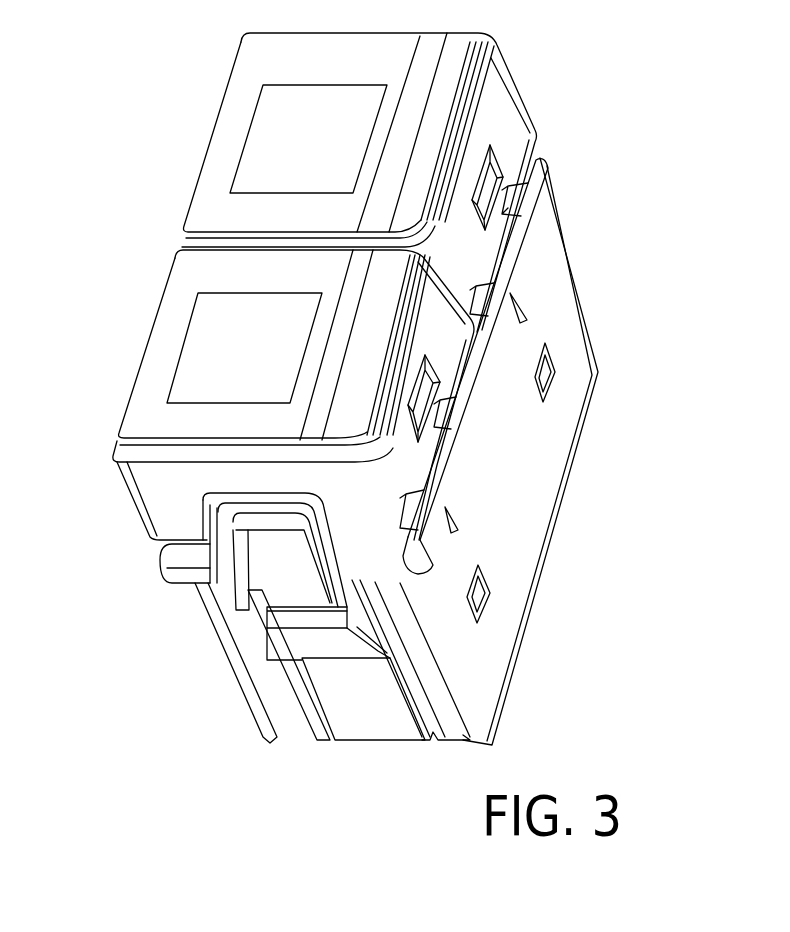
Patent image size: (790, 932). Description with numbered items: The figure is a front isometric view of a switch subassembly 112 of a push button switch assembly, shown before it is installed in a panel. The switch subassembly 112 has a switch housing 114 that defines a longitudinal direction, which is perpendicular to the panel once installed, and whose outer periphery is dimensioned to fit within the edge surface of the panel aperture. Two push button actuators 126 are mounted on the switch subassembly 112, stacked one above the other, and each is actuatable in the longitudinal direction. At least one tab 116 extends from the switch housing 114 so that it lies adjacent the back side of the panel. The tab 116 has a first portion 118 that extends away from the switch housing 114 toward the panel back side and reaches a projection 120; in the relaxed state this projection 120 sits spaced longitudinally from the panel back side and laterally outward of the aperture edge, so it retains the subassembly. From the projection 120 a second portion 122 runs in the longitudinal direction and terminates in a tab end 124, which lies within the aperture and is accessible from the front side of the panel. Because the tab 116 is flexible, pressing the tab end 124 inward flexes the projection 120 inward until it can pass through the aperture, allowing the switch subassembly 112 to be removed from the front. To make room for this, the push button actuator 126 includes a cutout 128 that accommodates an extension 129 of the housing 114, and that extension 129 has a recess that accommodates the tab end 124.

The switch subassembly 112 is at (583, 248).
The switch housing 114 is at (495, 656).
The tab 116 is at (392, 748).
The first portion 118 is at (318, 650).
The projection 120 is at (296, 620).
The second portion 122 is at (287, 575).
The tab end 124 is at (228, 524).
The push button actuator 126 is at (218, 152).
The cutout 128 is at (235, 493).
The extension 129 is at (262, 513).